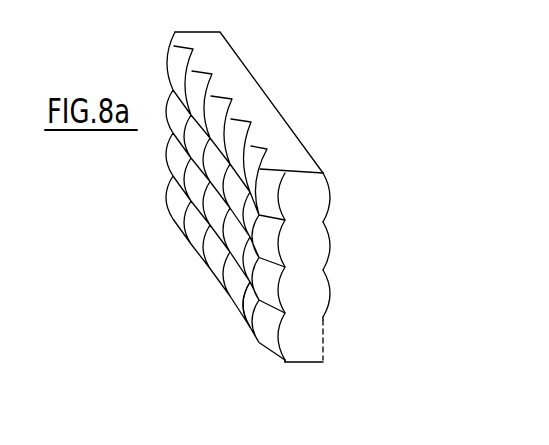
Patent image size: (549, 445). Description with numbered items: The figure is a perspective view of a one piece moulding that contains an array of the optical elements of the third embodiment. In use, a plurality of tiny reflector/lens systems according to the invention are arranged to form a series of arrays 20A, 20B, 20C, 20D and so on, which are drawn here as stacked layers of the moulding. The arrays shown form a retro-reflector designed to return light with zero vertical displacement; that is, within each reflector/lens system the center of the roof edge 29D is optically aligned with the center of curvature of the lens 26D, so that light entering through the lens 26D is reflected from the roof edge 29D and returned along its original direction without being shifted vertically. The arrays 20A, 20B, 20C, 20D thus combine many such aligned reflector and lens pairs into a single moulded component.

The array 20A is at (352, 193).
The array 20B is at (352, 255).
The array 20C is at (353, 297).
The array 20D is at (363, 340).
The lens 26D is at (325, 347).
The roof edge 29D is at (231, 311).